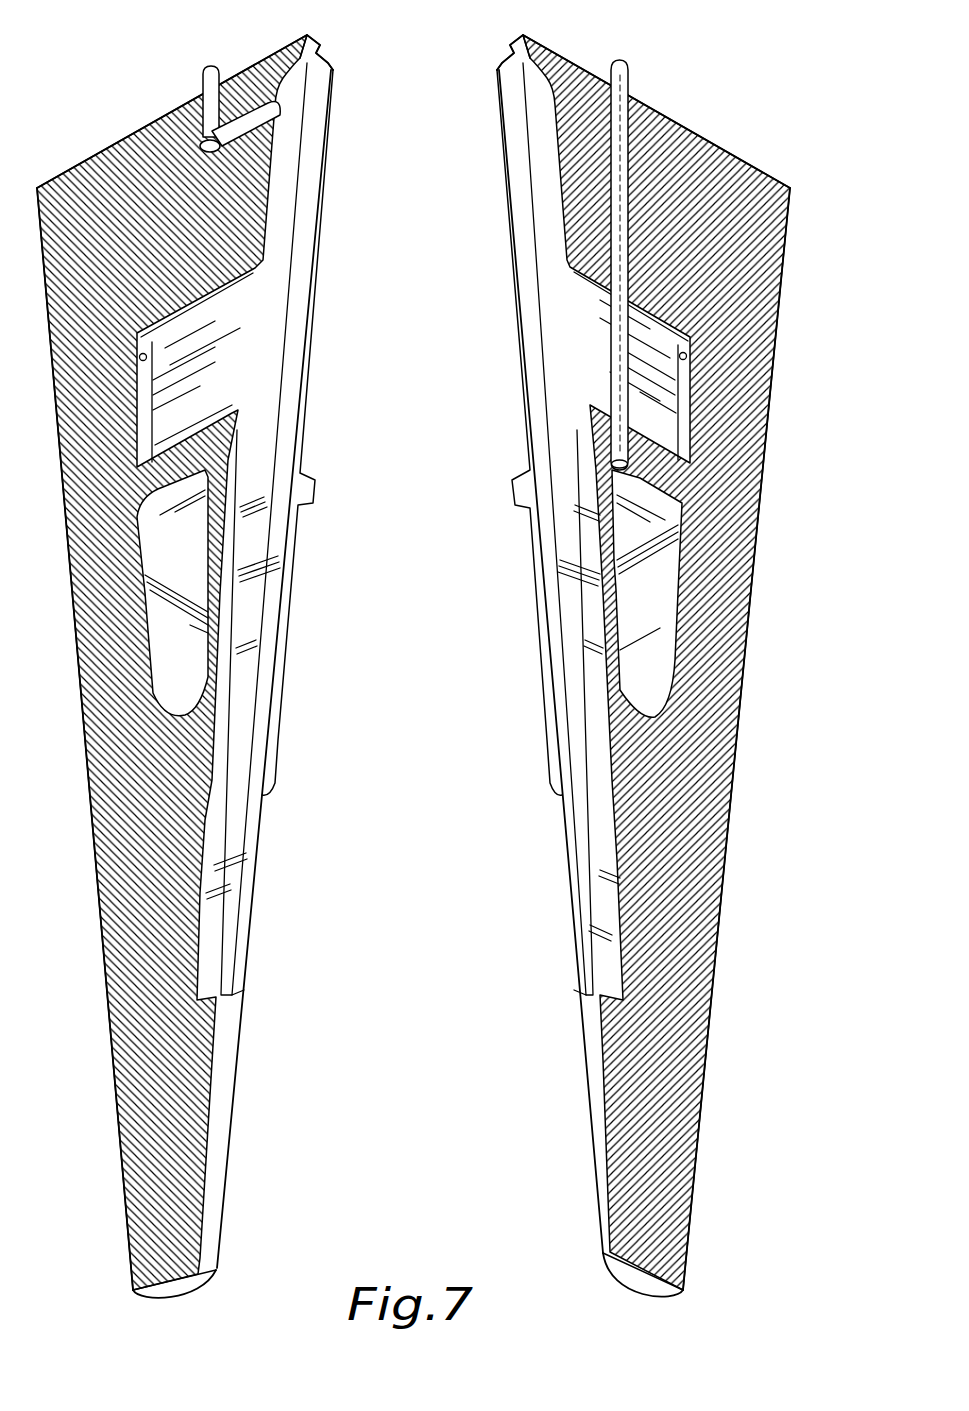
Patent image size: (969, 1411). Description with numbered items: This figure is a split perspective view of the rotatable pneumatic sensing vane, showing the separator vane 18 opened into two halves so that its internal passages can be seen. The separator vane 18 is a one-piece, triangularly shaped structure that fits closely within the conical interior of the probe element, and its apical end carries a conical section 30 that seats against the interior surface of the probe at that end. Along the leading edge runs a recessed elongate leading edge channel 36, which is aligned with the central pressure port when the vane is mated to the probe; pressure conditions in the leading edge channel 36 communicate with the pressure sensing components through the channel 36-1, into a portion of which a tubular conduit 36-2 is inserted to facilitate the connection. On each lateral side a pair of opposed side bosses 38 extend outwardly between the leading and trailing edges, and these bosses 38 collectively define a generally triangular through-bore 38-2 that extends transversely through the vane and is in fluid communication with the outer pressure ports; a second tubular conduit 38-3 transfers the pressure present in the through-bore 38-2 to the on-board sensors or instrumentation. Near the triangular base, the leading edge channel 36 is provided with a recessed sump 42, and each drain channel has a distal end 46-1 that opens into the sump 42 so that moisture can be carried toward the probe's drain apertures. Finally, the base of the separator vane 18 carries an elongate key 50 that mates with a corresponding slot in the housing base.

The separator vane 18 is at (736, 1151).
The conical section 30 is at (590, 1267).
The leading edge channel 36 is at (240, 652).
The channel 36-1 is at (281, 112).
The tubular conduit 36-2 is at (204, 72).
The side bosses 38 is at (521, 500).
The through-bore 38-2 is at (203, 574).
The tubular conduit 38-3 is at (631, 76).
The recessed sump 42 is at (155, 430).
The distal end 46-1 is at (680, 356).
The elongate key 50 is at (327, 42).